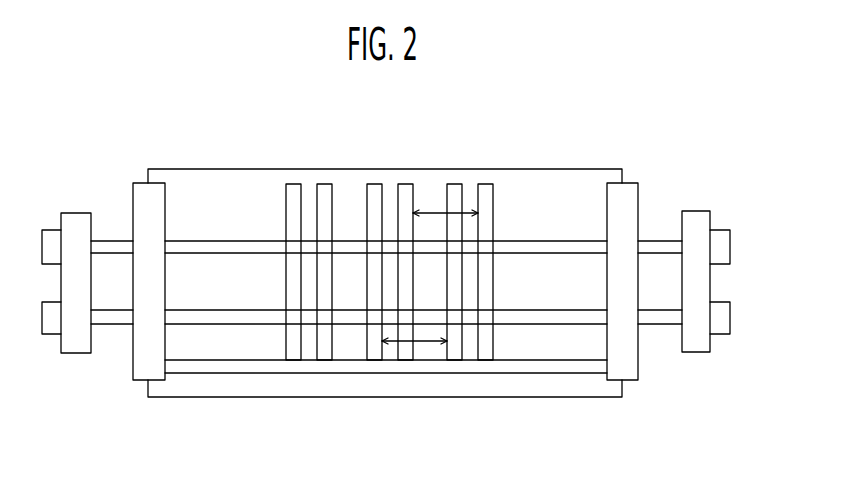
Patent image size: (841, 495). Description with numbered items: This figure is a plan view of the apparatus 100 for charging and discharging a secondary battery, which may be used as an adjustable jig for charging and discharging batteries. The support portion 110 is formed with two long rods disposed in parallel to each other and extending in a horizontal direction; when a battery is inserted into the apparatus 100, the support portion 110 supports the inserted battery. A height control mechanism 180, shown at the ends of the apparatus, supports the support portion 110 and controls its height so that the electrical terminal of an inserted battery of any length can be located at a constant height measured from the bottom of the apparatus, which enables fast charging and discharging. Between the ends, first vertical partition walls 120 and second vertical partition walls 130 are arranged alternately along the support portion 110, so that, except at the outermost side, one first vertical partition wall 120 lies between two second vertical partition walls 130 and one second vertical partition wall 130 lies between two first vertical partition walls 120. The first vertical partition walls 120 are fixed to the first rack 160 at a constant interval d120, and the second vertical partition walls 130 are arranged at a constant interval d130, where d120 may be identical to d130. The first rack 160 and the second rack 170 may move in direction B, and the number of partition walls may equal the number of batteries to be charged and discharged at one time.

The apparatus for charging and discharging a secondary battery 100 is at (75, 104).
The support portion 110 is at (529, 240).
The first vertical partition walls 120 is at (291, 184).
The second vertical partition walls 130 is at (322, 184).
The first rack 160 is at (538, 374).
The second rack 170 is at (377, 374).
The height control mechanism 180 is at (698, 352).
The constant interval of the first vertical partition walls d120 is at (420, 341).
The constant interval of the second vertical partition walls d130 is at (440, 213).